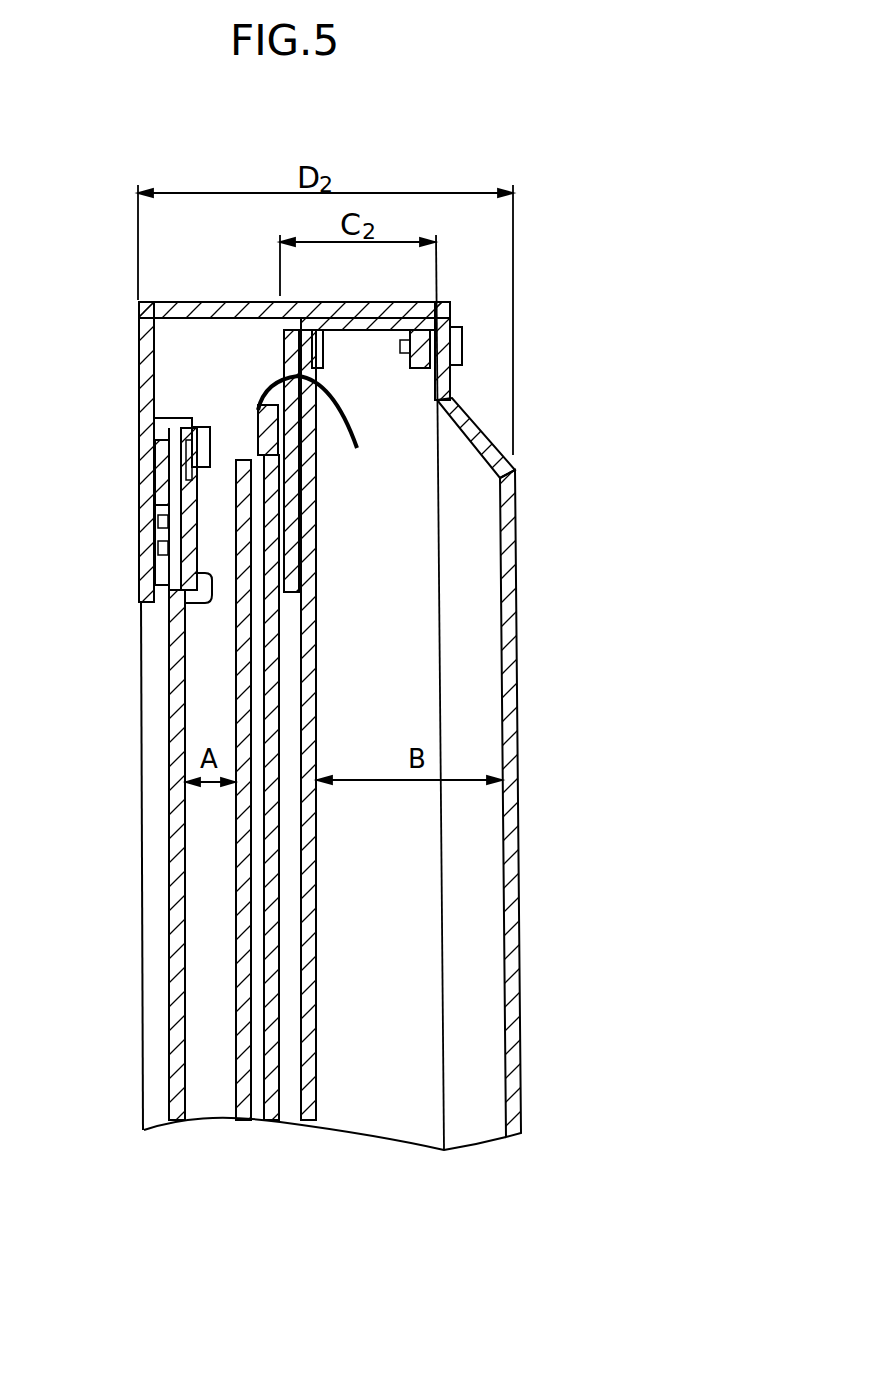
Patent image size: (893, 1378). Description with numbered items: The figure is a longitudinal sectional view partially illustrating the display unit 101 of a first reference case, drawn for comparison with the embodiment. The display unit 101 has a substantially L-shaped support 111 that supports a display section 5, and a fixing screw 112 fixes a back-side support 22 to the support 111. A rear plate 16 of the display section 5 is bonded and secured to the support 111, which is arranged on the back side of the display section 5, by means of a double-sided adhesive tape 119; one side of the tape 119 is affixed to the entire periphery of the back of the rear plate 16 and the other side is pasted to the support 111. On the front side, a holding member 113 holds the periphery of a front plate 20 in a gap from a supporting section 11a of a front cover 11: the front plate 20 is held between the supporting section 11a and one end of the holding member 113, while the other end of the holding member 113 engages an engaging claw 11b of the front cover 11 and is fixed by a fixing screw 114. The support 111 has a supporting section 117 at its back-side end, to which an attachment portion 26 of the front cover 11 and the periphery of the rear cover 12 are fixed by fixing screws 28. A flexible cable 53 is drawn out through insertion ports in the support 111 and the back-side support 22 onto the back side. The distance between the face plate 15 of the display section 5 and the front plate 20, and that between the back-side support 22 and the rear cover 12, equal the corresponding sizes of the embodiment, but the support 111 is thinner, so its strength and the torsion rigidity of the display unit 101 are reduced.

The display section 5 is at (226, 931).
The front cover 11 is at (148, 398).
The supporting section of front cover 11a is at (152, 548).
The engaging claw 11b is at (186, 440).
The rear cover 12 is at (517, 1030).
The face plate 15 is at (246, 1013).
The rear plate 16 is at (277, 1068).
The front plate 20 is at (174, 870).
The back-side support 22 is at (318, 936).
The attachment portion 26 is at (441, 402).
The fixing screws 28 is at (461, 352).
The flexible cable 53 is at (354, 418).
The display unit 101 is at (408, 1241).
The support 111 is at (291, 592).
The fixing screw 112 is at (322, 350).
The holding member 113 is at (198, 590).
The fixing screw 114 is at (201, 428).
The supporting section 117 is at (432, 323).
The double-sided adhesive tape 119 is at (260, 600).